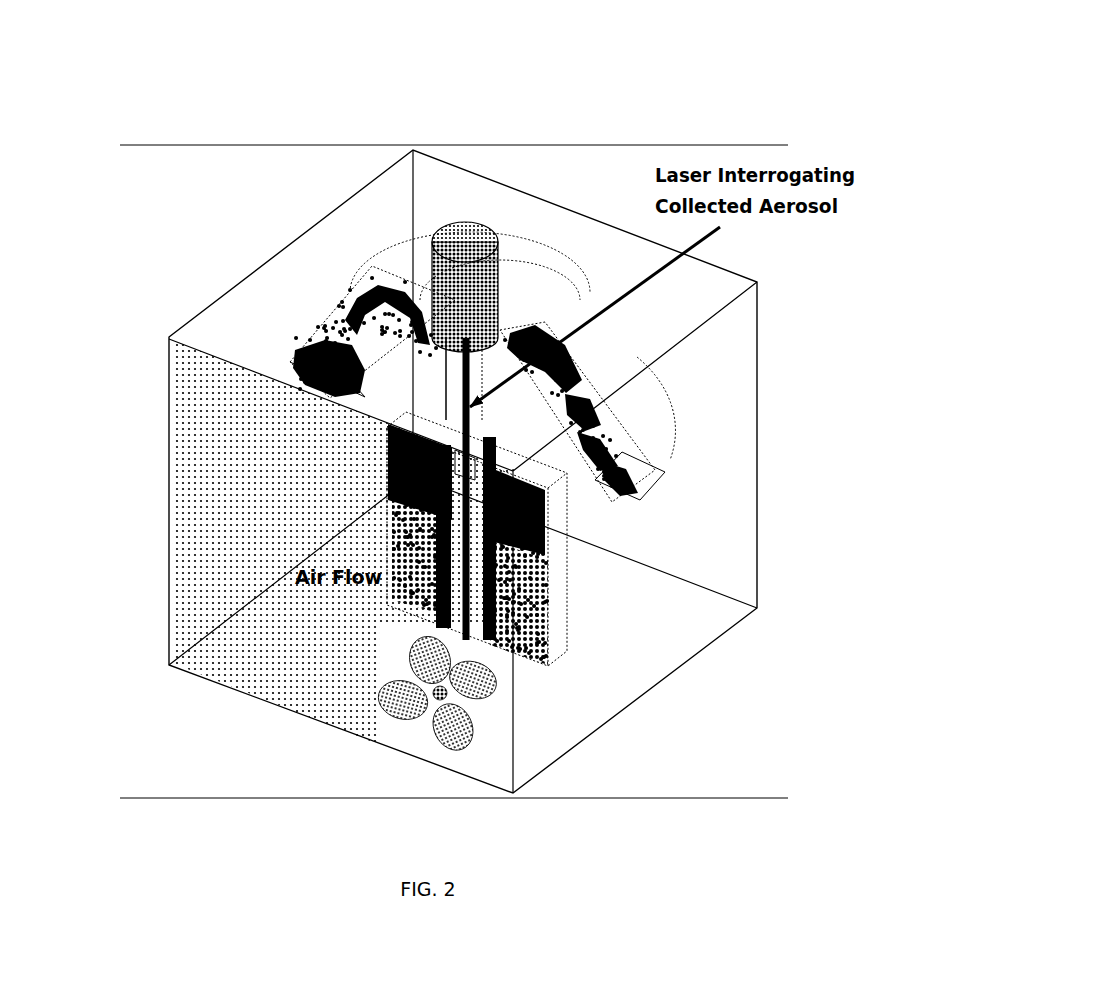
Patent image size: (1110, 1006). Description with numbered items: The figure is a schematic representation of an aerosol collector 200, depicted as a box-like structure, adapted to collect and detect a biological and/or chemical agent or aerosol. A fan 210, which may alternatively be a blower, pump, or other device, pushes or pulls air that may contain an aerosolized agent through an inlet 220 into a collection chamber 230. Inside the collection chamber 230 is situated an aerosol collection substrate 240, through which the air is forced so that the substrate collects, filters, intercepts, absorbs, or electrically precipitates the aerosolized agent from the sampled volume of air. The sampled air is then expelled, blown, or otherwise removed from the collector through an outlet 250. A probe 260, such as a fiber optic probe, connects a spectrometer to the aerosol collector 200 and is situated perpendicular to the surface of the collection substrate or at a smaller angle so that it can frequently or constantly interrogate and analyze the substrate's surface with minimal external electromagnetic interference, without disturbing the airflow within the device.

The aerosol collector 200 is at (641, 128).
The fan 210 is at (390, 675).
The inlet 220 is at (618, 479).
The collection chamber 230 is at (450, 413).
The aerosol collection substrate 240 is at (462, 462).
The outlet 250 is at (532, 588).
The probe 260 is at (430, 281).